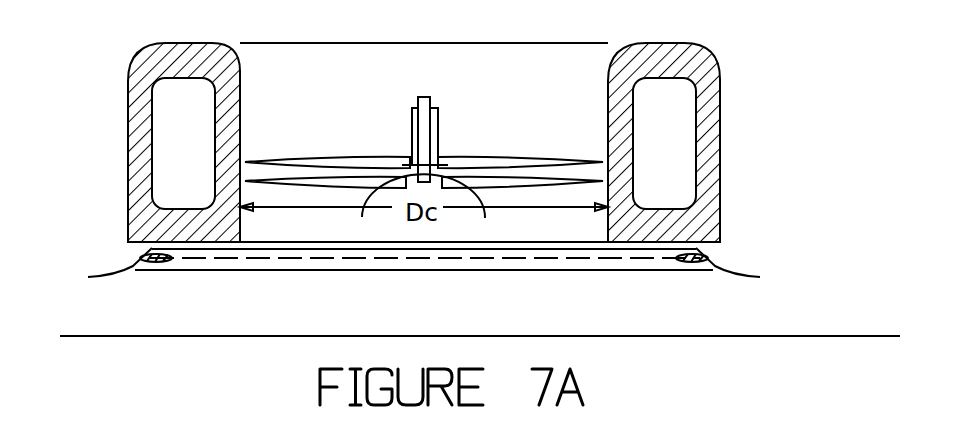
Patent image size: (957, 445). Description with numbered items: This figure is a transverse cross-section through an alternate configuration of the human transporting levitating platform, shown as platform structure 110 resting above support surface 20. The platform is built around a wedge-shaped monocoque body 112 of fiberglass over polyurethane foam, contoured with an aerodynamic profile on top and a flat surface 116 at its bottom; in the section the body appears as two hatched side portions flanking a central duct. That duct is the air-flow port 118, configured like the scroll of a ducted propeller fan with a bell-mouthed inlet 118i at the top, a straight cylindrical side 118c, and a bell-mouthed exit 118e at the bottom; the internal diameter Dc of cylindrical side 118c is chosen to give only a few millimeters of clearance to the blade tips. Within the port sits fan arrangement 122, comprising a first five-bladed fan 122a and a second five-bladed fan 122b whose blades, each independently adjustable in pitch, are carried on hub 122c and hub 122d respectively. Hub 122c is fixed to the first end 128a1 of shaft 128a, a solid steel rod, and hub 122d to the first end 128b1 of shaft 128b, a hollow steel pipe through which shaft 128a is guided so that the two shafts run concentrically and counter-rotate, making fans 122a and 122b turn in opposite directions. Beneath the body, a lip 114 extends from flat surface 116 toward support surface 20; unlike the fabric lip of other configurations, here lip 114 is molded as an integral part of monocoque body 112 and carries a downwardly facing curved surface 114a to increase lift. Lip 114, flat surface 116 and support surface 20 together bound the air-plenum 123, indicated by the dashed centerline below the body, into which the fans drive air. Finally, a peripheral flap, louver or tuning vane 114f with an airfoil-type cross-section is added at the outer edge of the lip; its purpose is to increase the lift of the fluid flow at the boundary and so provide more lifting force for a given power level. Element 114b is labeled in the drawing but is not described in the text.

The support surface 20 is at (810, 335).
The platform structure 110 is at (844, 249).
The monocoque body 112 is at (203, 171).
The lip 114 is at (140, 250).
The downwardly facing curved surface 114a is at (128, 228).
The sheet lower lip 114b is at (97, 264).
The peripheral flap/louver/tuning vane 114f is at (92, 278).
The flat surface 116 is at (170, 256).
The air-flow port 118 is at (580, 109).
The straight cylindrical side 118c is at (245, 118).
The bell-mouthed exit 118e is at (243, 245).
The bell-mouthed inlet 118i is at (236, 56).
The fan arrangement 122 is at (512, 194).
The first 5-bladed fan 122a is at (438, 163).
The second 5-bladed fan 122b is at (410, 163).
The hub 122c is at (468, 206).
The hub 122d is at (410, 163).
The air-plenum 123 is at (490, 262).
The shaft 128a is at (430, 125).
The first end of shaft 128a1 is at (393, 209).
The shaft 128b is at (436, 108).
The first end of shaft 128b1 is at (412, 162).